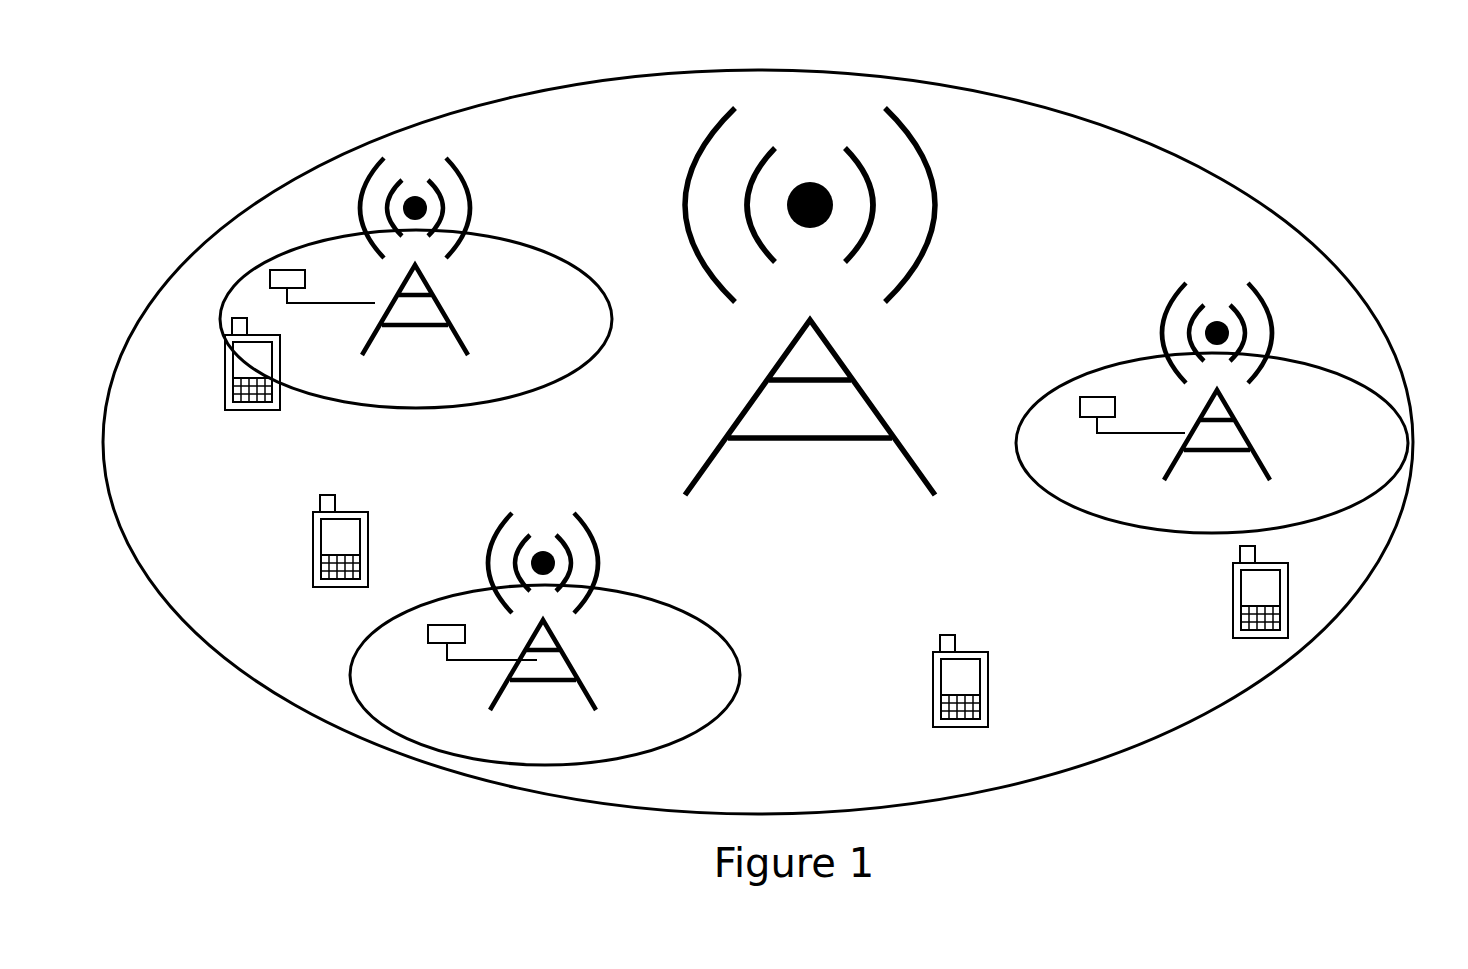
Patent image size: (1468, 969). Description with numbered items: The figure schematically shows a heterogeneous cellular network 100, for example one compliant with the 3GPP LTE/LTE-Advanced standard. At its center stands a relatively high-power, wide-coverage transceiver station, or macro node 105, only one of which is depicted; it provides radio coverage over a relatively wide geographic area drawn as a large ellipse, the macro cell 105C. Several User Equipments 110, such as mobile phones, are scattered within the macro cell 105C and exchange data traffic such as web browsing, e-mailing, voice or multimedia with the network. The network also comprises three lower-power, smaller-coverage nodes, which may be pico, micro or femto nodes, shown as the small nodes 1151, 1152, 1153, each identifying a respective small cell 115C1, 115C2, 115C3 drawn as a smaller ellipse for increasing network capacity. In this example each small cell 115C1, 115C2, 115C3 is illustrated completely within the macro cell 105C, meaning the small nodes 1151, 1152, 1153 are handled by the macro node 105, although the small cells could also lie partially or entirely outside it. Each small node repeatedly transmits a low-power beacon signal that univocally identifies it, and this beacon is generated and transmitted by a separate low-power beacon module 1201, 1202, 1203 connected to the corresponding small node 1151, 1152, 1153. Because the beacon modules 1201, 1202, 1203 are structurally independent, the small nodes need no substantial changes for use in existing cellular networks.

The cellular network 100 is at (1113, 105).
The macro node 105 is at (853, 377).
The macro cell 105C is at (1177, 153).
The User Equipment 110 is at (227, 387).
The small node 1151 is at (440, 315).
The small node 1152 is at (580, 673).
The small node 1153 is at (1243, 437).
The small cell 115C1 is at (508, 245).
The small cell 115C2 is at (720, 632).
The small cell 115C3 is at (1302, 367).
The beacon module 1201 is at (292, 272).
The beacon module 1202 is at (428, 643).
The beacon module 1203 is at (1098, 397).